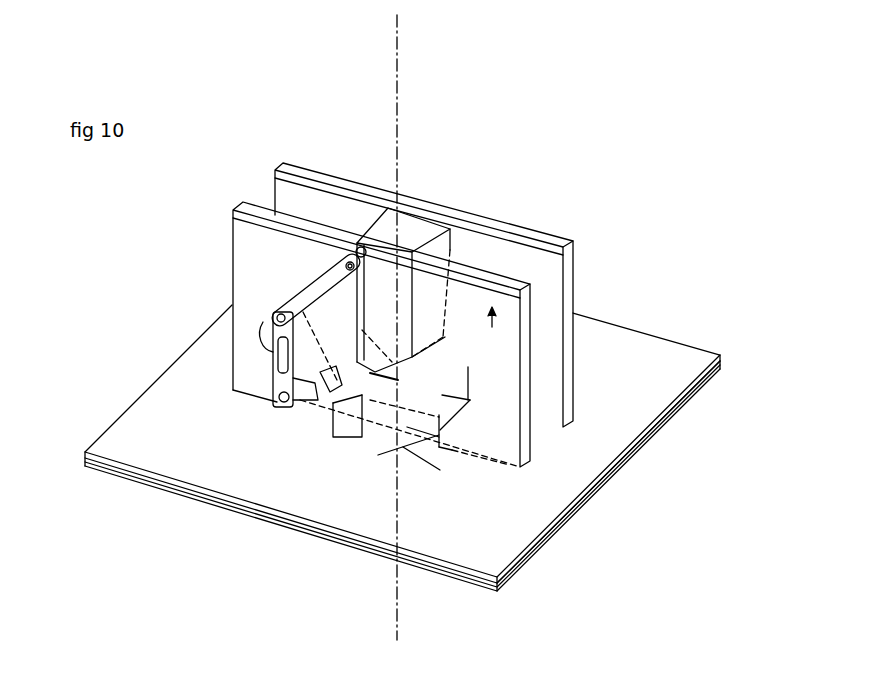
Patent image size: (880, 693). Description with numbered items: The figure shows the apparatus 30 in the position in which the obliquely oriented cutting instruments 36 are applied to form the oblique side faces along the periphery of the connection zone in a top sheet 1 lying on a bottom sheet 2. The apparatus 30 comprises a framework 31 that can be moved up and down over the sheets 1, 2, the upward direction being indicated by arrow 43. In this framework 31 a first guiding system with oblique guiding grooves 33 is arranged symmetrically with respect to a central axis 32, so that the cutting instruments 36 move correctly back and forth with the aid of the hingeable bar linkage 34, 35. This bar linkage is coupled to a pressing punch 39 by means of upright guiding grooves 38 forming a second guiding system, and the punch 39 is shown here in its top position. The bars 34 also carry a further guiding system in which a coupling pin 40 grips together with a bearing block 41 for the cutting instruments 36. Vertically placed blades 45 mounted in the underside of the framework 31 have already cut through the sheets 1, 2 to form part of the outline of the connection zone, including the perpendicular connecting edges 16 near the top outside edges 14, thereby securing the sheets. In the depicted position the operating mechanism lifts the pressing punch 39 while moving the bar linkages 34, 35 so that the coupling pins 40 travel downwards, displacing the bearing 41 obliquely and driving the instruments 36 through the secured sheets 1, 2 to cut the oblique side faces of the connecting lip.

The top sheet 1 is at (657, 416).
The bottom sheet 2 is at (651, 430).
The top outside edge 14 is at (453, 417).
The intermediate connecting edge 16 is at (407, 447).
The apparatus 30 is at (455, 158).
The framework 31 is at (573, 251).
The central axis 32 is at (398, 23).
The guiding groove 33 is at (258, 335).
The bar 34 is at (280, 387).
The bar 35 is at (337, 271).
The obliquely oriented cutting instrument 36 is at (400, 352).
The guiding groove 38 is at (340, 276).
The pressing punch 39 is at (427, 305).
The coupling pin 40 is at (282, 370).
The bearing block 41 is at (318, 332).
The arrow 43 is at (495, 320).
The blade 45 is at (347, 422).